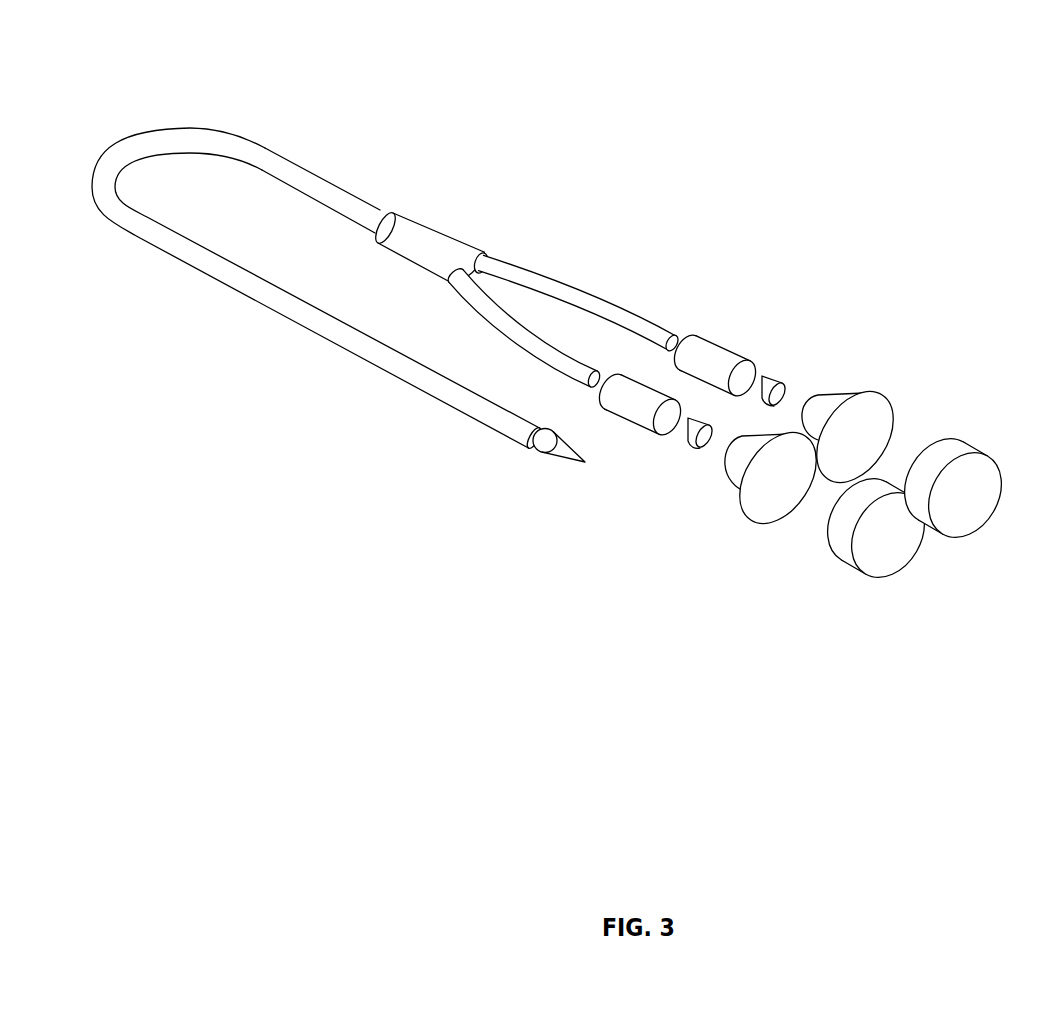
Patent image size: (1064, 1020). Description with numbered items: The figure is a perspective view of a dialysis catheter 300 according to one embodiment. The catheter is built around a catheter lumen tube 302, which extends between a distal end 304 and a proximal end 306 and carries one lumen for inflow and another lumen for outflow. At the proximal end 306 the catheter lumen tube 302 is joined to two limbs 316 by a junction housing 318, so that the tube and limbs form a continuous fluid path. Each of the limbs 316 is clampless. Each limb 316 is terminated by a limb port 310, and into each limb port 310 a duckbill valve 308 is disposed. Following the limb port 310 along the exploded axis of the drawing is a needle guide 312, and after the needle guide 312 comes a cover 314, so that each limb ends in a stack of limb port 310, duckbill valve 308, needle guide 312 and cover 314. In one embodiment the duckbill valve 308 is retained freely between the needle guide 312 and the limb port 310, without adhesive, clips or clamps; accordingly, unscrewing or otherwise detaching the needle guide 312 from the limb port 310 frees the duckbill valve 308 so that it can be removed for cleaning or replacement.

The dialysis catheter 300 is at (872, 66).
The catheter lumen tube 302 is at (293, 312).
The distal end 304 is at (535, 427).
The proximal end 306 is at (388, 208).
The duckbill valve 308 is at (708, 435).
The limb port 310 is at (655, 412).
The needle guide 312 is at (788, 481).
The cover 314 is at (893, 557).
The limbs 316 is at (503, 320).
The junction housing 318 is at (452, 248).